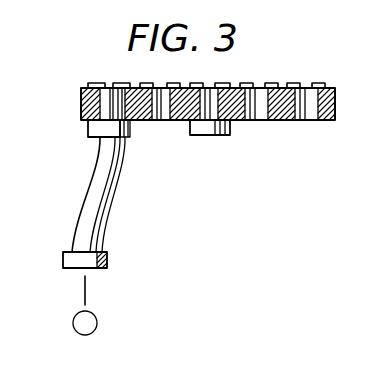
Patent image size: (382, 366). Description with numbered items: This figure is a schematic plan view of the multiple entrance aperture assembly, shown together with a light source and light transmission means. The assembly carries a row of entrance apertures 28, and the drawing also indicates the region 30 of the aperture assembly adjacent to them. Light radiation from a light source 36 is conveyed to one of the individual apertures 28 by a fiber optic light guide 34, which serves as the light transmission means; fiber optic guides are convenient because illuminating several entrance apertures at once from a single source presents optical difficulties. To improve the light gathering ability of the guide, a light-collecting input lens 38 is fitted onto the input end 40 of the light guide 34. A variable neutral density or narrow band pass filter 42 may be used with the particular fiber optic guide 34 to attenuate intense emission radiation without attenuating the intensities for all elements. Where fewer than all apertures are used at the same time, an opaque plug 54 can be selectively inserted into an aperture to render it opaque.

The aperture 28 is at (175, 121).
The hatched block segments 30 is at (285, 121).
The narrow band pass filter 42 is at (95, 136).
The opaque plug 54 is at (210, 135).
The fiber optic light guide 34 is at (90, 192).
The input end 40 is at (69, 252).
The light-collecting lens 38 is at (63, 262).
The light source 36 is at (73, 325).